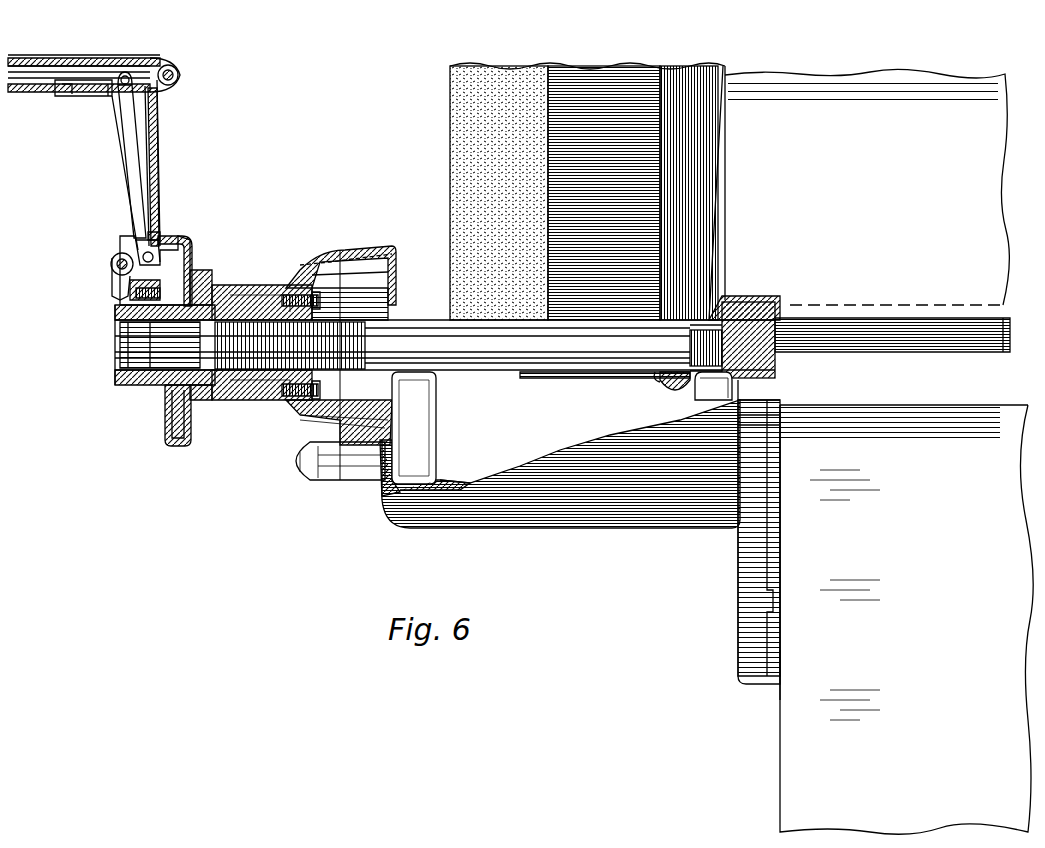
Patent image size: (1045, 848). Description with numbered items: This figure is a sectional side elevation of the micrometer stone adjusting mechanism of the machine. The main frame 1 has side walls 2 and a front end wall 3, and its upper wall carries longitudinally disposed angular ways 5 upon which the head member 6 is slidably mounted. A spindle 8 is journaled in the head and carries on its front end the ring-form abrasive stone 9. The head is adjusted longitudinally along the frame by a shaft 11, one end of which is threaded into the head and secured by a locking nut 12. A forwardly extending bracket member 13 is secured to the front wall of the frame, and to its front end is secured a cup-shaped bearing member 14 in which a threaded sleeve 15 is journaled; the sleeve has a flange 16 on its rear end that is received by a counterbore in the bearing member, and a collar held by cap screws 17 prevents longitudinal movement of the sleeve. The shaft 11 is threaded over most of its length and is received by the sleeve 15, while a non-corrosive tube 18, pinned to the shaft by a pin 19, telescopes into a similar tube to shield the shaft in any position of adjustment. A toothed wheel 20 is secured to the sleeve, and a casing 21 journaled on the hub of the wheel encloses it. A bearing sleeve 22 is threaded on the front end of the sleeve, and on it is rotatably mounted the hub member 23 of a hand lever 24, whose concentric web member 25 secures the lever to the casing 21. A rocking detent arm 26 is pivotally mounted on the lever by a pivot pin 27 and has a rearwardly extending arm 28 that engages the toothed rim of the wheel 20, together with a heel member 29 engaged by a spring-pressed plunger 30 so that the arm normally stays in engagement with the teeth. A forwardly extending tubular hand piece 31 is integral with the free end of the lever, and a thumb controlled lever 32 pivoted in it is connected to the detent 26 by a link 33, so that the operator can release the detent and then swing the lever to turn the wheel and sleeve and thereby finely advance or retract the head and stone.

The main frame 1 is at (783, 742).
The side walls 2 is at (810, 695).
The front end wall 3 is at (778, 700).
The angular ways 5 is at (1008, 310).
The head member 6 is at (1003, 215).
The spindle 8 is at (725, 150).
The abrasive stone 9 is at (455, 118).
The shaft 11 is at (478, 366).
The locking nut 12 is at (712, 378).
The bracket member 13 is at (502, 520).
The cup-shaped bearing member 14 is at (310, 268).
The threaded sleeve 15 is at (243, 265).
The flange 16 is at (300, 272).
The cap screws 17 is at (322, 295).
The non-corrosive tube 18 is at (520, 378).
The pin 19 is at (655, 383).
The toothed wheel 20 is at (192, 283).
The casing 21 is at (192, 244).
The bearing sleeve 22 is at (116, 326).
The hub member 23 is at (118, 382).
The hand lever 24 is at (118, 175).
The web member 25 is at (163, 417).
The rocking detent arm 26 is at (132, 243).
The pivot pin 27 is at (110, 265).
The rearwardly extending arm 28 is at (165, 240).
The heel member 29 is at (128, 282).
The spring-pressed plunger 30 is at (134, 292).
The tubular hand piece 31 is at (40, 88).
The thumb controlled lever 32 is at (78, 96).
The link 33 is at (125, 140).